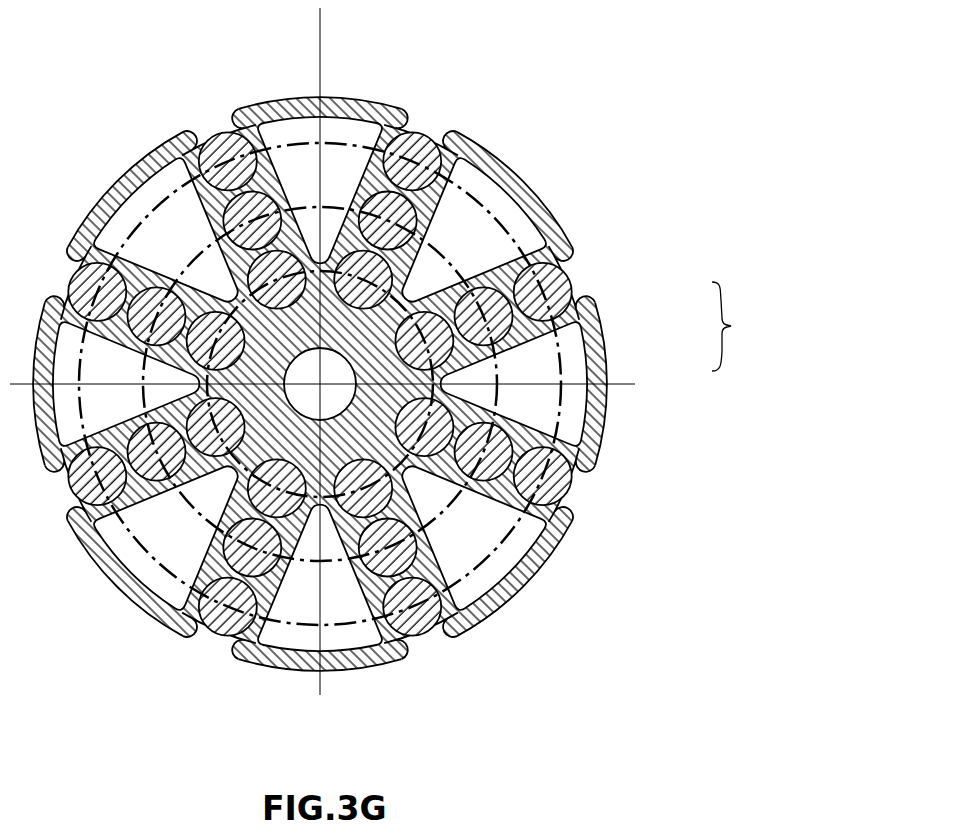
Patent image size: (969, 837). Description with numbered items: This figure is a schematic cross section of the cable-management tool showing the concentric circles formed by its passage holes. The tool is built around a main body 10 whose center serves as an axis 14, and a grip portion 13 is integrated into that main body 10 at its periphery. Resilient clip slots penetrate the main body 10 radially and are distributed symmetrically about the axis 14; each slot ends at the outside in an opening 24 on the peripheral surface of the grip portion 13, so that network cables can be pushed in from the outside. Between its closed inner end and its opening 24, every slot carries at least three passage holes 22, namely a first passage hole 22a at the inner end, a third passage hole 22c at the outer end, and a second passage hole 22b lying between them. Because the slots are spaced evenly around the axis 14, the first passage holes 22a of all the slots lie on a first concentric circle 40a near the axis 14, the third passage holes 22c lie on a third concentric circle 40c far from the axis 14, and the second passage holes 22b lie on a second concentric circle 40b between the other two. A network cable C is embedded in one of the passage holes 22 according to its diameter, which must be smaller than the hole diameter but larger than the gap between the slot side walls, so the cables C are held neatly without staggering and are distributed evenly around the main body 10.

The main body 10 is at (386, 362).
The grip portion 13 is at (277, 96).
The axis 14 is at (343, 262).
The opening 24 is at (215, 135).
The passage holes 22 is at (739, 326).
The first passage hole 22a is at (560, 372).
The second passage hole 22b is at (556, 335).
The third passage hole 22c is at (560, 303).
The first concentric circle 40a is at (395, 294).
The second concentric circle 40b is at (433, 241).
The third concentric circle 40c is at (463, 181).
The network cable C is at (328, 372).